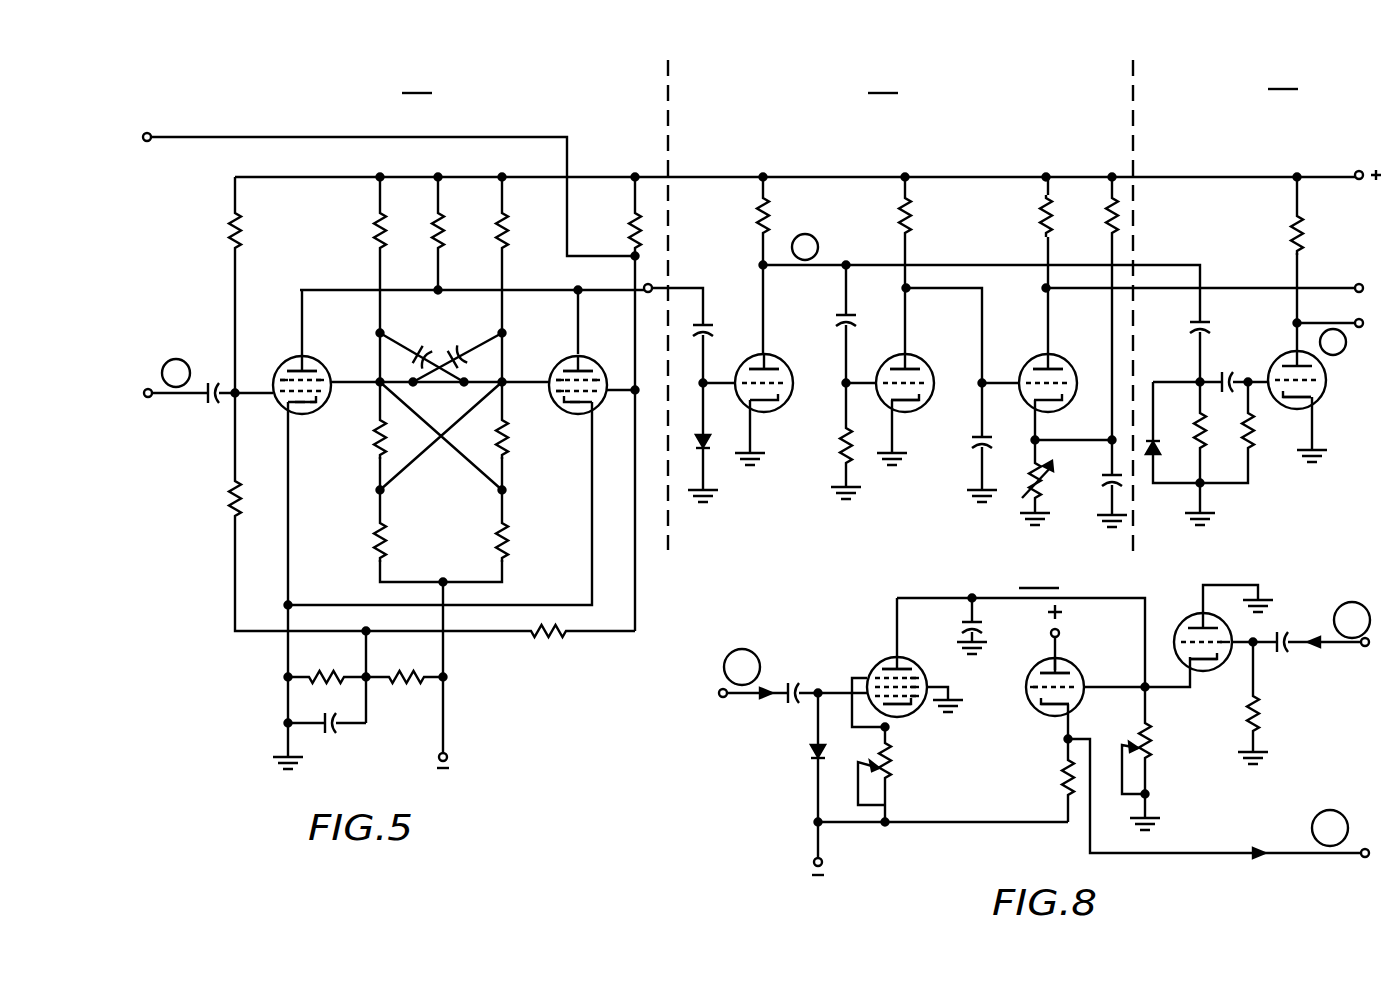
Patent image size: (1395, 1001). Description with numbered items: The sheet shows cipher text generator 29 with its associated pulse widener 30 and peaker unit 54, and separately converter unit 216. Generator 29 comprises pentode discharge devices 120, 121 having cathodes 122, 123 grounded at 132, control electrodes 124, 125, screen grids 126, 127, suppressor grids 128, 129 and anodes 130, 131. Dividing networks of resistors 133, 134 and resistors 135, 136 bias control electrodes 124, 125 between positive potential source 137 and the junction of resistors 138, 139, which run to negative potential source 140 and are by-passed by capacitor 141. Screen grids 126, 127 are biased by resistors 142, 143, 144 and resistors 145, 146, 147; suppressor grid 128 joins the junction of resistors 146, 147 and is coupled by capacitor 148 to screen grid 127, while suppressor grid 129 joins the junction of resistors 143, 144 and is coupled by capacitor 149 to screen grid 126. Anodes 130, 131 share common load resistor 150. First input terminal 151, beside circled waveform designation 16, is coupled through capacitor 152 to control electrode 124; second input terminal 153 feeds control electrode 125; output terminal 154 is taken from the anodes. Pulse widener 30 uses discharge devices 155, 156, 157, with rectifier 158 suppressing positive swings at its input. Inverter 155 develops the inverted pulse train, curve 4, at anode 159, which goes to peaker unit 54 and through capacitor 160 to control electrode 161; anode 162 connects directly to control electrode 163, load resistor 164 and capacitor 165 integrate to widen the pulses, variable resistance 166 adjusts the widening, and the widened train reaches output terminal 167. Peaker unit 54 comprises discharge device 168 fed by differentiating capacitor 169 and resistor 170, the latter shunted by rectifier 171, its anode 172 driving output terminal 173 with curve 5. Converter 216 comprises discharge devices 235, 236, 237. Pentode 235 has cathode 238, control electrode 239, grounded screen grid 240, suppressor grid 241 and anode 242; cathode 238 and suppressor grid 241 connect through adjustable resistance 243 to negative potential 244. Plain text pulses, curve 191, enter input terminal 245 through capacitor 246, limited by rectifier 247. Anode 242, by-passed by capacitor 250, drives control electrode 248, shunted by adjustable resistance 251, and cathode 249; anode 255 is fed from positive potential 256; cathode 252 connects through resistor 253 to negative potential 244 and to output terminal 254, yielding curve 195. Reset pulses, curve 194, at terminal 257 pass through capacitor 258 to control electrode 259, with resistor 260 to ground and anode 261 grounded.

In FIG. 5, the cipher text generator 29 is at (417, 82).
In FIG. 5, the inverter and pulse widener unit 30 is at (883, 82).
In FIG. 5, the peaker unit 54 is at (1283, 78).
In FIG. 5, the curve 4 is at (805, 247).
In FIG. 5, the curve 5 is at (1333, 342).
In FIG. 5, the input signal point 16 is at (176, 373).
In FIG. 5, the second input terminal 153 is at (149, 134).
In FIG. 5, the resistor 133 is at (231, 225).
In FIG. 5, the resistor 142 is at (378, 222).
In FIG. 5, the common load resistor 150 is at (436, 224).
In FIG. 5, the resistor 145 is at (506, 222).
In FIG. 5, the resistor 135 is at (633, 226).
In FIG. 5, the output terminal 154 is at (652, 286).
In FIG. 5, the load resistor 164 is at (907, 222).
In FIG. 5, the capacitor 160 is at (843, 316).
In FIG. 5, the electron discharge device 155 is at (784, 394).
In FIG. 5, the anode 159 is at (777, 365).
In FIG. 5, the rectifier 158 is at (708, 441).
In FIG. 5, the electron discharge device 156 is at (928, 385).
In FIG. 5, the anode 162 is at (915, 368).
In FIG. 5, the control electrode 161 is at (925, 395).
In FIG. 5, the electron discharge device 157 is at (1020, 372).
In FIG. 5, the control electrode 163 is at (1062, 367).
In FIG. 5, the capacitor 165 is at (977, 448).
In FIG. 5, the variable resistance 166 is at (1041, 489).
In FIG. 5, the source of positive potential 137 is at (1356, 172).
In FIG. 5, the output terminal 167 is at (1355, 285).
In FIG. 5, the output terminal 173 is at (1355, 320).
In FIG. 5, the capacitor 169 is at (1205, 325).
In FIG. 5, the anode 172 is at (1280, 364).
In FIG. 5, the resistor 170 is at (1198, 422).
In FIG. 5, the rectifier 171 is at (1158, 449).
In FIG. 5, the electron discharge device 168 is at (1317, 402).
In FIG. 5, the first input terminal 151 is at (146, 388).
In FIG. 5, the capacitor 152 is at (208, 400).
In FIG. 5, the electron discharge device 120 is at (282, 400).
In FIG. 5, the anode 130 is at (291, 358).
In FIG. 5, the screen grid 126 is at (276, 378).
In FIG. 5, the suppressor grid 128 is at (318, 372).
In FIG. 5, the control electrode 124 is at (318, 402).
In FIG. 5, the cathode 122 is at (305, 404).
In FIG. 5, the resistor 134 is at (232, 500).
In FIG. 5, the resistor 143 is at (378, 440).
In FIG. 5, the capacitor 149 is at (418, 350).
In FIG. 5, the capacitor 148 is at (463, 350).
In FIG. 5, the electron discharge device 121 is at (598, 397).
In FIG. 5, the anode 131 is at (566, 357).
In FIG. 5, the suppressor grid 129 is at (556, 374).
In FIG. 5, the screen grid 127 is at (593, 372).
In FIG. 5, the control electrode 125 is at (556, 401).
In FIG. 5, the cathode 123 is at (574, 403).
In FIG. 5, the resistor 146 is at (504, 442).
In FIG. 5, the resistor 147 is at (505, 537).
In FIG. 5, the resistor 144 is at (379, 540).
In FIG. 5, the resistor 138 is at (333, 675).
In FIG. 5, the resistor 139 is at (410, 675).
In FIG. 5, the resistor 136 is at (565, 634).
In FIG. 5, the ground 132 is at (285, 755).
In FIG. 5, the capacitor 141 is at (335, 730).
In FIG. 5, the source of negative potential 140 is at (448, 756).
In FIG. 8, the converter unit 216 is at (1039, 577).
In FIG. 8, the curve 191 is at (742, 667).
In FIG. 8, the curve 194 is at (1352, 620).
In FIG. 8, the curve 195 is at (1330, 828).
In FIG. 8, the input terminal 245 is at (722, 698).
In FIG. 8, the capacitor 246 is at (795, 686).
In FIG. 8, the electron discharge device 235 is at (879, 664).
In FIG. 8, the anode 242 is at (910, 660).
In FIG. 8, the suppressor grid 241 is at (912, 676).
In FIG. 8, the screen grid 240 is at (925, 687).
In FIG. 8, the control electrode 239 is at (918, 703).
In FIG. 8, the cathode 238 is at (897, 712).
In FIG. 8, the rectifier 247 is at (811, 753).
In FIG. 8, the adjustable resistance 243 is at (891, 780).
In FIG. 8, the source of negative potential 244 is at (822, 863).
In FIG. 8, the capacitor 250 is at (978, 624).
In FIG. 8, the source of positive potential 256 is at (1059, 633).
In FIG. 8, the electron discharge device 236 is at (1075, 675).
In FIG. 8, the anode 255 is at (1047, 668).
In FIG. 8, the control electrode 248 is at (1027, 690).
In FIG. 8, the cathode 252 is at (1048, 708).
In FIG. 8, the resistor 253 is at (1066, 785).
In FIG. 8, the adjustable resistance 251 is at (1150, 757).
In FIG. 8, the electron discharge device 237 is at (1190, 622).
In FIG. 8, the anode 261 is at (1218, 622).
In FIG. 8, the control electrode 259 is at (1215, 641).
In FIG. 8, the cathode 249 is at (1200, 665).
In FIG. 8, the capacitor 258 is at (1284, 637).
In FIG. 8, the terminal 257 is at (1363, 648).
In FIG. 8, the resistor 260 is at (1257, 712).
In FIG. 8, the output terminal 254 is at (1362, 858).